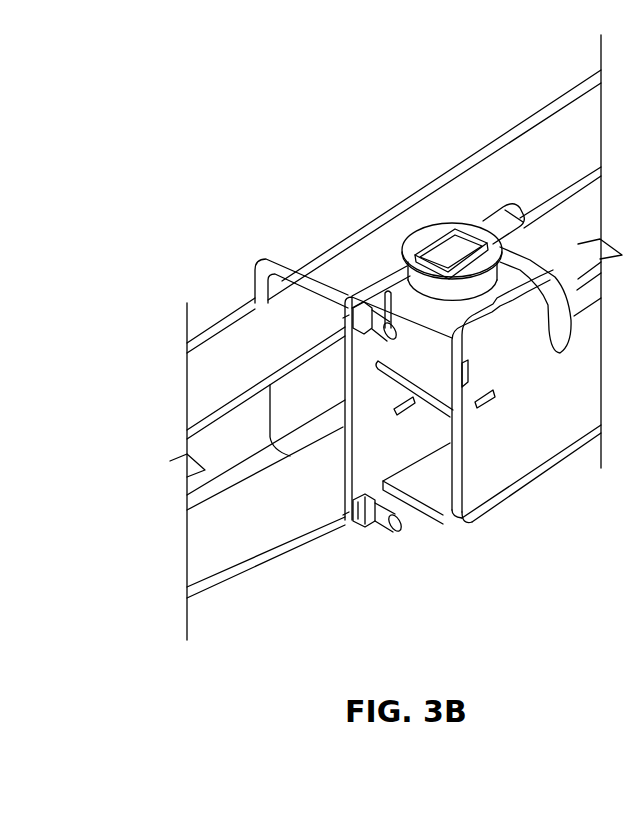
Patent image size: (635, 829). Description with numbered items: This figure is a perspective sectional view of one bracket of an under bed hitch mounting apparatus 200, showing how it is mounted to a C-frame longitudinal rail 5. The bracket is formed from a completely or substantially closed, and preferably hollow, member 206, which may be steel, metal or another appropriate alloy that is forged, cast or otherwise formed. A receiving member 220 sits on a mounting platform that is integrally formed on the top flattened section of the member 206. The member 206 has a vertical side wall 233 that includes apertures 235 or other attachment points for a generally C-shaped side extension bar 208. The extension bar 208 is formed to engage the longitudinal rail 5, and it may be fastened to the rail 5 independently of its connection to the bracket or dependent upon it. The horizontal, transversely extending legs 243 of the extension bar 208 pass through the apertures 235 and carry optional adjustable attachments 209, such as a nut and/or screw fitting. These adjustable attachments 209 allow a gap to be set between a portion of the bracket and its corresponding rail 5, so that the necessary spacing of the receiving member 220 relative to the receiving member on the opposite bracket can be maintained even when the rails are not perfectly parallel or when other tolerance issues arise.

The under bed hitch mounting apparatus 200 is at (273, 114).
The C-frame longitudinal rail 5 is at (237, 347).
The member 206 is at (483, 479).
The side extension bar 208 is at (287, 268).
The adjustable attachment 209 is at (352, 527).
The receiving member 220 is at (430, 242).
The vertical side wall 233 is at (413, 440).
The aperture 235 is at (350, 317).
The horizontal transversely extending leg 243 is at (390, 325).